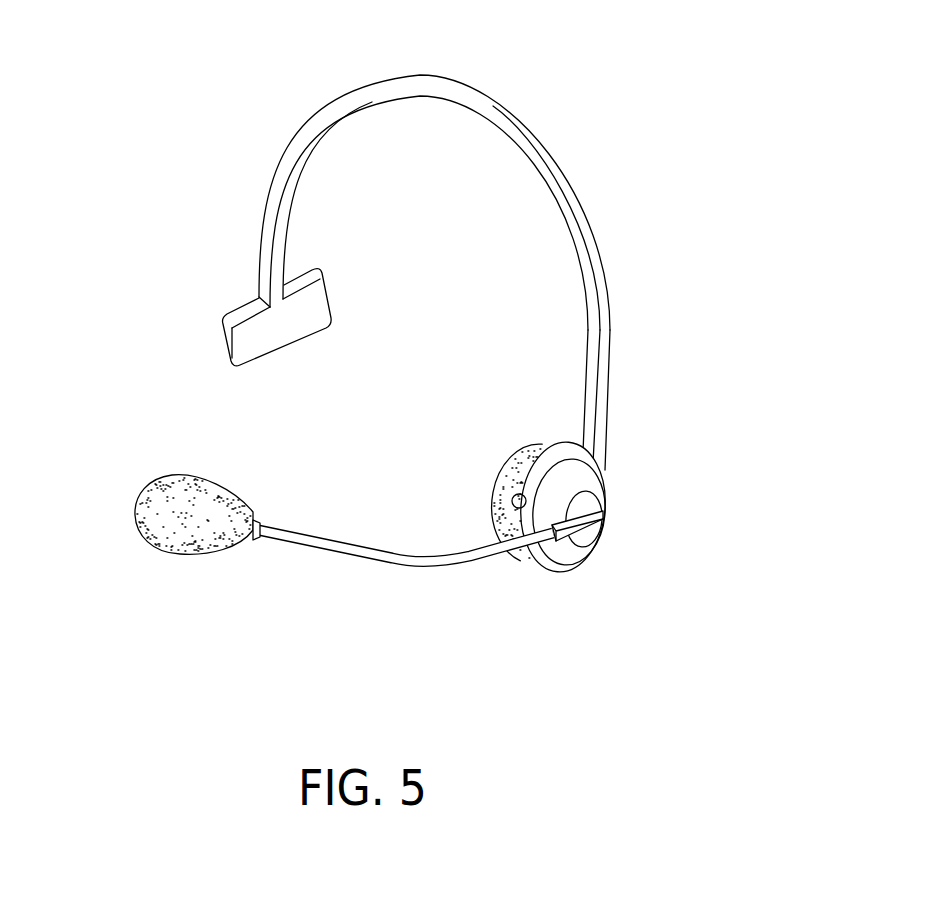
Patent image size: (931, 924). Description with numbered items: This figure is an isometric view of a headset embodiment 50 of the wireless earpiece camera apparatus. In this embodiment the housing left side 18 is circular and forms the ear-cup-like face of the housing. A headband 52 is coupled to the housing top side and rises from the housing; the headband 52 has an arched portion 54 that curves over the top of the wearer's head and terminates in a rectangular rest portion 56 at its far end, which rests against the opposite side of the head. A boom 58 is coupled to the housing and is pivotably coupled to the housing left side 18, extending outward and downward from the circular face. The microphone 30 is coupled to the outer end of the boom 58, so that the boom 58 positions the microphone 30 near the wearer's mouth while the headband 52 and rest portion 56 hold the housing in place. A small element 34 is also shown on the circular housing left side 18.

The headset embodiment 50 is at (436, 324).
The headband 52 is at (611, 291).
The arched portion 54 is at (485, 107).
The rectangular rest portion 56 is at (277, 322).
The housing left side 18 is at (607, 487).
The button 34 is at (513, 494).
The boom 58 is at (428, 566).
The microphone 30 is at (193, 522).